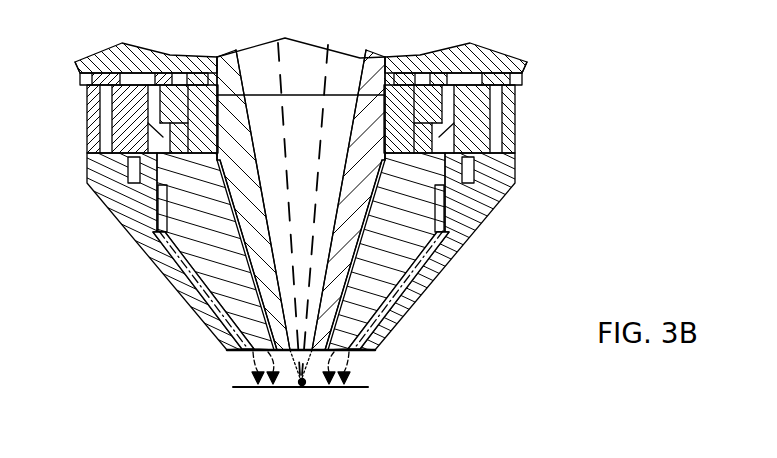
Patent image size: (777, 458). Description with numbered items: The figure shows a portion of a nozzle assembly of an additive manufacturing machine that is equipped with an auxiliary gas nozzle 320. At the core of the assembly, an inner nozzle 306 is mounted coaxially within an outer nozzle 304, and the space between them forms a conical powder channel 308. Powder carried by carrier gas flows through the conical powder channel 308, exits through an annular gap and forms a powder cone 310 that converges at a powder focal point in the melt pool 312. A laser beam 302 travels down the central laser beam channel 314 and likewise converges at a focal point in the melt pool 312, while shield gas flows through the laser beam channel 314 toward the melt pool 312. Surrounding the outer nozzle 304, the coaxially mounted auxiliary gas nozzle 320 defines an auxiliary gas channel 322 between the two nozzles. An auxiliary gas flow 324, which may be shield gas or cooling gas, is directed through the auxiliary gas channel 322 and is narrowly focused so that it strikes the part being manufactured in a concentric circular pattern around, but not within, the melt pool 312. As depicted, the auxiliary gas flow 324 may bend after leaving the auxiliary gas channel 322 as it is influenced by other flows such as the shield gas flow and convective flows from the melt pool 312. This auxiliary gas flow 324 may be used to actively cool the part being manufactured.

The laser beam 302 is at (325, 70).
The outer nozzle 304 is at (203, 260).
The inner nozzle 306 is at (270, 293).
The conical powder channel 308 is at (283, 340).
The powder cone 310 is at (307, 372).
The melt pool 312 is at (301, 387).
The laser beam channel 314 is at (261, 58).
The auxiliary gas nozzle 320 is at (130, 223).
The auxiliary gas channel 322 is at (378, 328).
The auxiliary gas flow 324 is at (347, 363).